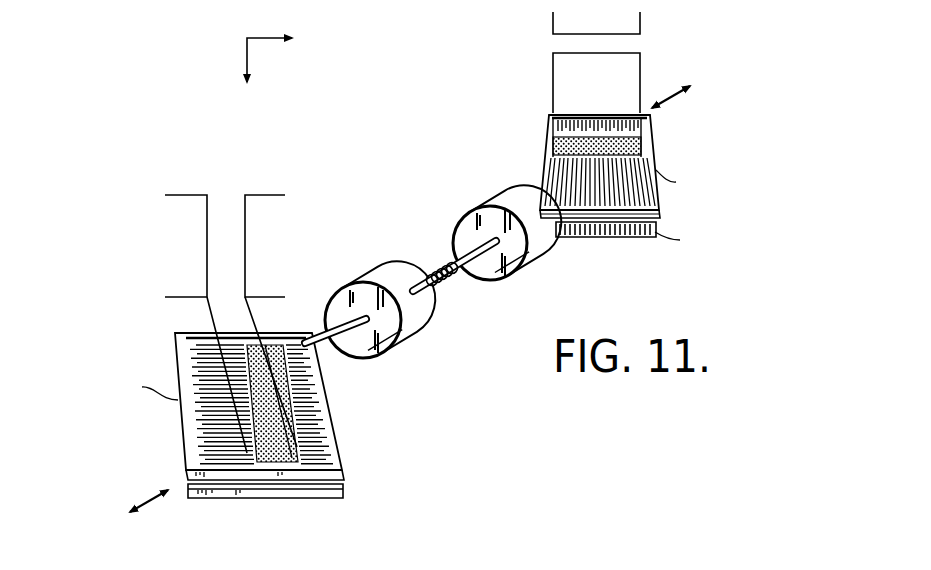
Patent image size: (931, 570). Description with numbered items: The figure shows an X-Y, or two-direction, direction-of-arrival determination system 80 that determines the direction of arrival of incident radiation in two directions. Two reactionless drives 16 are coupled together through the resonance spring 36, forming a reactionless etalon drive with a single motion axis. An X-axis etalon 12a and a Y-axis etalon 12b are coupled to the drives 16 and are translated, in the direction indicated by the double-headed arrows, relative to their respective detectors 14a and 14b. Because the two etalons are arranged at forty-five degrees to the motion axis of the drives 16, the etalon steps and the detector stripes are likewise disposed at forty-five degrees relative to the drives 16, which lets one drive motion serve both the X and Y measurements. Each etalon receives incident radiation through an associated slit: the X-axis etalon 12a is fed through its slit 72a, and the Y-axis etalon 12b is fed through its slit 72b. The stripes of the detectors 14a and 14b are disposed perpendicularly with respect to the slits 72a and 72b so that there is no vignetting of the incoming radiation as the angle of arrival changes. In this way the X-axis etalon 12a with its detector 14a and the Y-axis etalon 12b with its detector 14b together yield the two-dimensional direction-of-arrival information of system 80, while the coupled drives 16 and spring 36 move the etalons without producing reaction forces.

The X-Y DOA determination system 80 is at (182, 48).
The slit 72a is at (245, 222).
The slit 72b is at (576, 34).
The X-axis etalon 12a is at (335, 410).
The Y-axis etalon 12b is at (645, 127).
The detector 14a is at (333, 493).
The detector 14b is at (603, 240).
The reactionless drive 16 is at (372, 273).
The resonance spring 36 is at (441, 285).